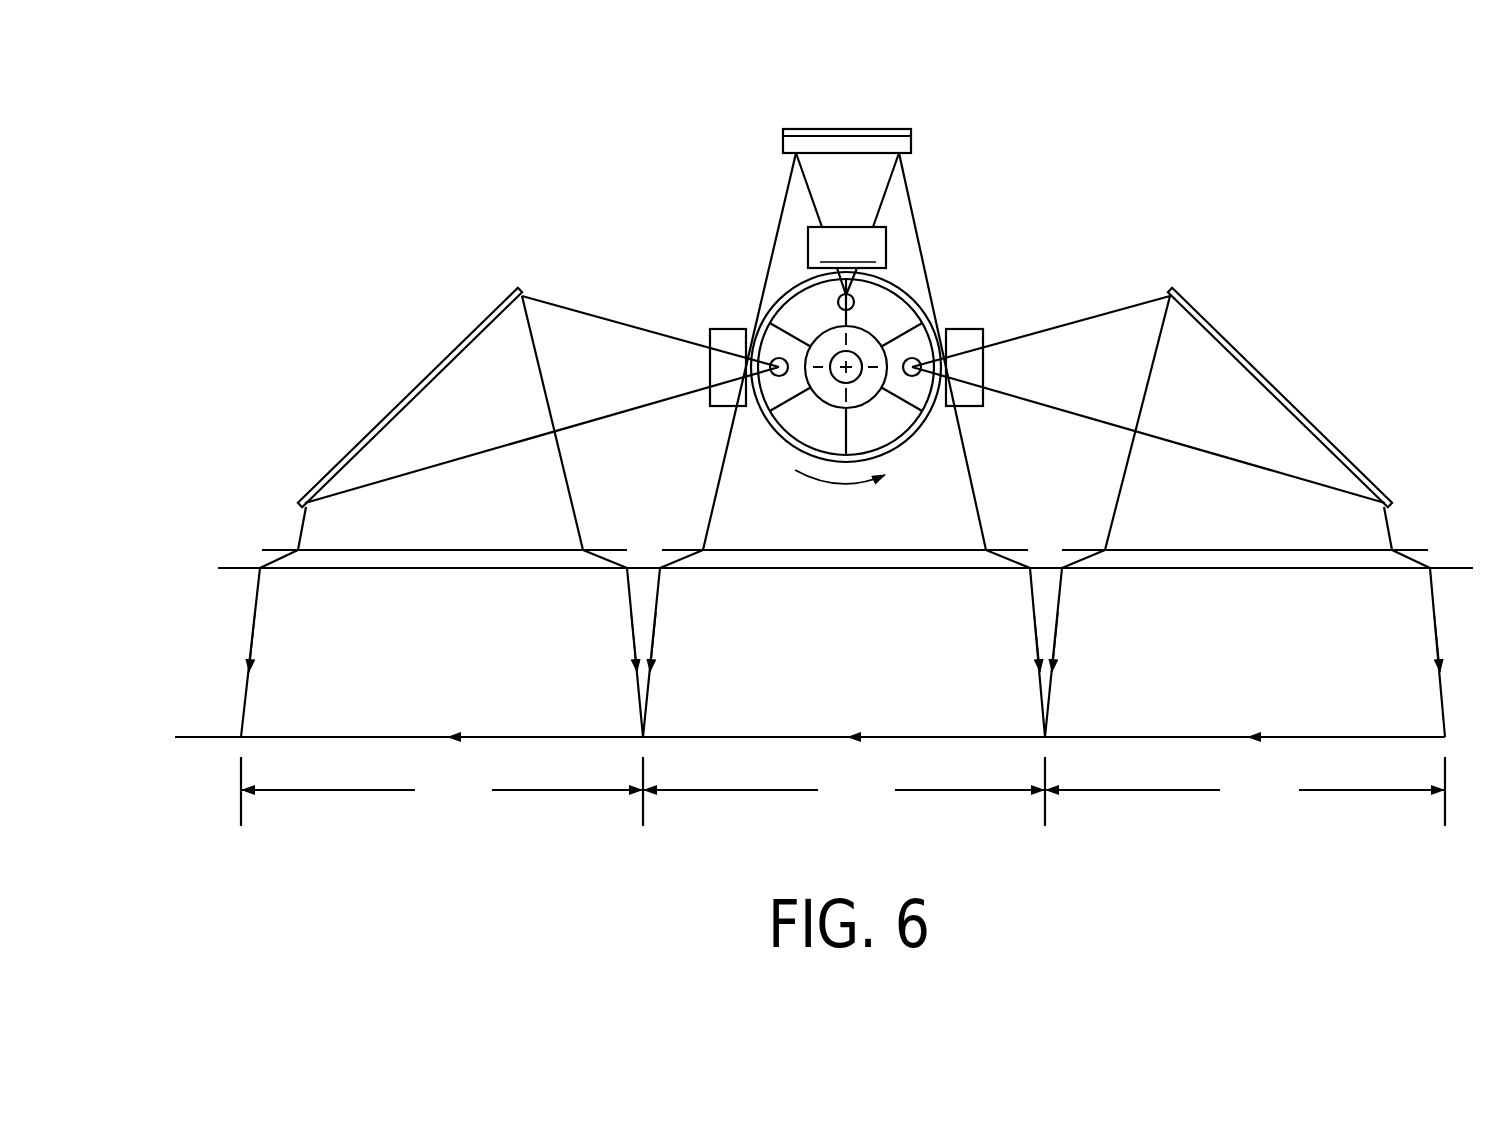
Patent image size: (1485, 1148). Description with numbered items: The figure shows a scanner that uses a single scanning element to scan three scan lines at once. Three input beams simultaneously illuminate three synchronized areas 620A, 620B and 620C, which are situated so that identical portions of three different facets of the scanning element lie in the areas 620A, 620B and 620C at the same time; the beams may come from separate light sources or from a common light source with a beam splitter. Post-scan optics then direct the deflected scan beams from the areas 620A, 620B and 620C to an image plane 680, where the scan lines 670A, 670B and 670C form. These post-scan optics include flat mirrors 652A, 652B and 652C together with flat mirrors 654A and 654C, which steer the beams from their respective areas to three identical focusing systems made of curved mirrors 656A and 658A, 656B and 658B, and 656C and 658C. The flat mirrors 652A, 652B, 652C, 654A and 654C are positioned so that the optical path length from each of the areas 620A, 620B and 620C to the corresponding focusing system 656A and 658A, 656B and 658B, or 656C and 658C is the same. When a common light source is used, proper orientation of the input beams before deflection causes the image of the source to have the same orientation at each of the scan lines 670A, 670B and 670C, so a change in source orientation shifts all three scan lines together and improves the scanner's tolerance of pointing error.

The flat mirror 652B is at (842, 128).
The synchronized area 620B is at (833, 290).
The synchronized area 620C is at (769, 357).
The synchronized area 620A is at (923, 357).
The flat mirror 652C is at (727, 328).
The flat mirror 652A is at (963, 328).
The flat mirror 654C is at (493, 312).
The flat mirror 654A is at (1196, 311).
The curved mirror 656C is at (462, 550).
The curved mirror 656B is at (738, 550).
The curved mirror 656A is at (1197, 550).
The curved mirror 658C is at (447, 570).
The curved mirror 658B is at (745, 570).
The curved mirror 658A is at (1212, 570).
The image plane 680 is at (200, 733).
The scan line 670C is at (442, 791).
The scan line 670B is at (844, 791).
The scan line 670A is at (1245, 791).